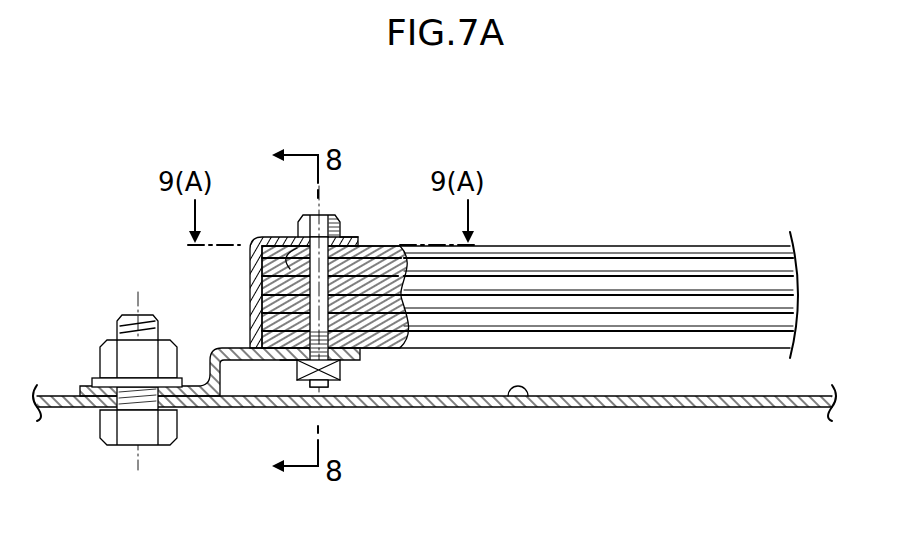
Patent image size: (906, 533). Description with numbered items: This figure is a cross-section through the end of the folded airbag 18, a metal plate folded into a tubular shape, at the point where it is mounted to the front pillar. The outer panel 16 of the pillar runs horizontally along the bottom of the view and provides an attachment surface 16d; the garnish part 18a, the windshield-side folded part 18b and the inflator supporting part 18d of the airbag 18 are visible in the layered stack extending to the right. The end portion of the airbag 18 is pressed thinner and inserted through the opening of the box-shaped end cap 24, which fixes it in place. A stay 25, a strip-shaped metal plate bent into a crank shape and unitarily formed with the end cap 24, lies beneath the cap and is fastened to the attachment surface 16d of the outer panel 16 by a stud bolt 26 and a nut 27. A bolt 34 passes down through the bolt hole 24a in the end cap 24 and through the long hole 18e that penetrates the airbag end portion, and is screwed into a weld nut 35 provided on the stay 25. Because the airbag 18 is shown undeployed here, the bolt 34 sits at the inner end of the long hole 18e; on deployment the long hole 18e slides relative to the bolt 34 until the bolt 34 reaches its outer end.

The outer panel 16 is at (658, 412).
The attachment surface 16d is at (530, 396).
The airbag 18 is at (672, 238).
The garnish part 18a is at (570, 245).
The windshield-side folded part 18b is at (693, 303).
The inflator supporting part 18d is at (557, 349).
The long hole 18e is at (291, 242).
The end cap 24 is at (244, 296).
The bolt hole 24a is at (331, 231).
The stay 25 is at (197, 384).
The stud bolt 26 is at (128, 436).
The nut 27 is at (102, 362).
The bolt 34 is at (323, 216).
The weld nut 35 is at (338, 371).